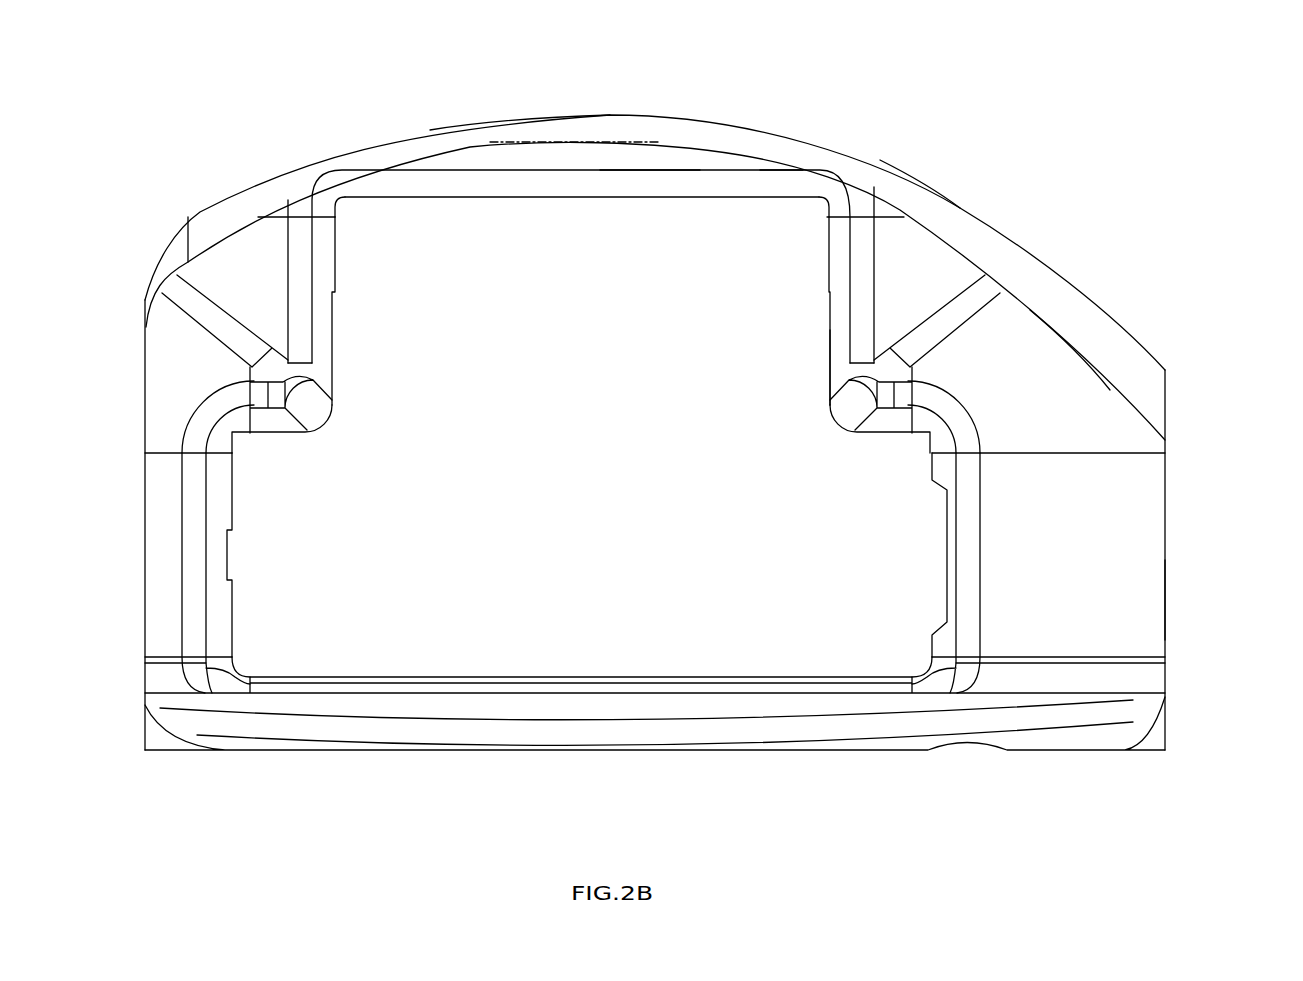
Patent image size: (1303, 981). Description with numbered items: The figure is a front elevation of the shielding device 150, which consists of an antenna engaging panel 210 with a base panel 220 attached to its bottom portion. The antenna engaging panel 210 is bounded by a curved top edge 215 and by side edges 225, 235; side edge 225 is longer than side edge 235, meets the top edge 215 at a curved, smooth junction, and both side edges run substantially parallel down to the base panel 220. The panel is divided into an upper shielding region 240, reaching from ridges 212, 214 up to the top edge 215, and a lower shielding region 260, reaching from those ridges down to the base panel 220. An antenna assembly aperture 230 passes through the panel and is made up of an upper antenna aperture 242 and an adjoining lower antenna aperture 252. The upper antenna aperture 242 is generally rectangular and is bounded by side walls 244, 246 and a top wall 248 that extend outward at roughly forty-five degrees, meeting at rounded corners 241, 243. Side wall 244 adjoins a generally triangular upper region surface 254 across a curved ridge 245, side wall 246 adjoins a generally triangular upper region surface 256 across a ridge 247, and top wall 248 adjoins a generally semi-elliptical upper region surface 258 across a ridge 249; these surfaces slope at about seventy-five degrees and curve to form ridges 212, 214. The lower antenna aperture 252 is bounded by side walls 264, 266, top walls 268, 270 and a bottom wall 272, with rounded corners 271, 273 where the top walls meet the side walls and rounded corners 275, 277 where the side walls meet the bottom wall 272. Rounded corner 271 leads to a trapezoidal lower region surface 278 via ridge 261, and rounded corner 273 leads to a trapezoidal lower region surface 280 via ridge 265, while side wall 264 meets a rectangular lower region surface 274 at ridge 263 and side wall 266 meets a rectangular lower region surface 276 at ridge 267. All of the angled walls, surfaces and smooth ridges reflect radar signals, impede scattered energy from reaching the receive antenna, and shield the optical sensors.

The shielding device 150 is at (655, 205).
The antenna engaging panel 210 is at (655, 291).
The top edge 215 is at (515, 93).
The upper shielding region 240 is at (921, 164).
The lower region surface 280 is at (1070, 352).
The upper region surface 258 is at (573, 162).
The upper region surface 254 is at (232, 248).
The lower region surface 278 is at (160, 425).
The lower shielding region 260 is at (1171, 532).
The side edge 225 is at (139, 558).
The side edge 235 is at (1112, 558).
The lower region surface 276 is at (1148, 600).
The antenna assembly aperture 230 is at (576, 234).
The ridge 249 is at (645, 177).
The upper antenna aperture 242 is at (791, 149).
The ridge 245 is at (300, 330).
The upper region surface 256 is at (893, 253).
The top wall 248 is at (585, 200).
The rounded corner 241 is at (340, 207).
The rounded corner 243 is at (813, 203).
The side wall 244 is at (337, 300).
The ridge 247 is at (862, 320).
The side wall 246 is at (830, 360).
The ridge 212 is at (190, 303).
The ridge 214 is at (985, 282).
The top wall 268 is at (280, 433).
The rounded corner 271 is at (240, 437).
The top wall 270 is at (840, 445).
The rounded corner 273 is at (908, 447).
The ridge 261 is at (205, 415).
The ridge 265 is at (955, 405).
The lower region surface 274 is at (160, 632).
The ridge 263 is at (193, 550).
The side wall 264 is at (235, 600).
The rounded corner 275 is at (250, 660).
The lower antenna aperture 252 is at (1078, 573).
The ridge 267 is at (968, 540).
The side wall 266 is at (945, 580).
The rounded corner 277 is at (920, 660).
The bottom wall 272 is at (610, 665).
The base panel 220 is at (655, 763).